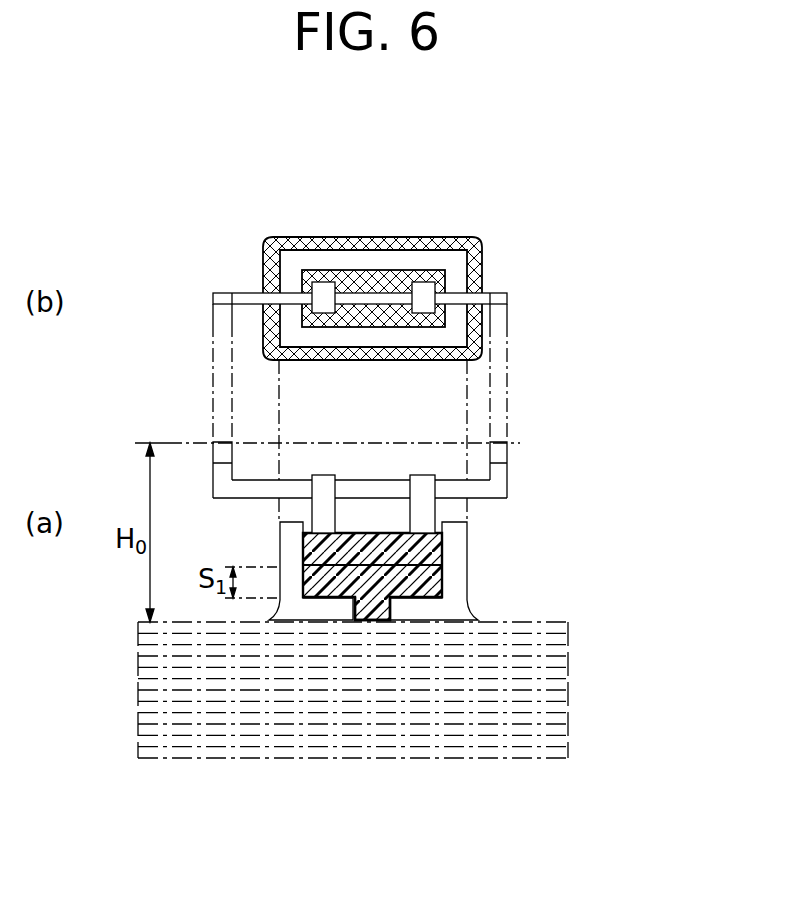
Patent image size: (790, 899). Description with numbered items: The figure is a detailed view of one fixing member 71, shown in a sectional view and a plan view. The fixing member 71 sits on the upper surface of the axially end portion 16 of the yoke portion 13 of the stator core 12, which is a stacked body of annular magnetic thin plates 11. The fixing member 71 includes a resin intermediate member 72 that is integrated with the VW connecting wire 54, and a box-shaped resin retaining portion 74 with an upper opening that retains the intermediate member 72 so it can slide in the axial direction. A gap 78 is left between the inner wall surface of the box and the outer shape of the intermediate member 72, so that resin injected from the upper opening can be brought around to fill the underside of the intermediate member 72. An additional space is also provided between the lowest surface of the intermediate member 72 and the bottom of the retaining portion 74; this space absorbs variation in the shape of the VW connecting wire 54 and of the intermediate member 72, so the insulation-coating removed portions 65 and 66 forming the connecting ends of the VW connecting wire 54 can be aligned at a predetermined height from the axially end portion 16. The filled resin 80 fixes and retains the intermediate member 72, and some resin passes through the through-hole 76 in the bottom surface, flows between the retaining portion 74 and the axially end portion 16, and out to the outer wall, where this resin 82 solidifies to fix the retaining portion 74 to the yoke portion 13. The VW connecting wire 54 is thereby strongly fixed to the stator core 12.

The magnetic thin plates 11 is at (378, 656).
The stator core 12 is at (406, 649).
The yoke portion 13 is at (560, 650).
The axially end portion 16 is at (545, 620).
The VW connecting wire 54 is at (457, 293).
The insulation-coating removed portion 65 is at (508, 453).
The insulation-coating removed portion 66 is at (214, 462).
The fixing member 71 is at (391, 411).
The intermediate member 72 is at (323, 282).
The intermediate member retaining portion 74 is at (430, 258).
The through-hole 76 is at (365, 610).
The gap 78 is at (372, 270).
The resin 80 is at (362, 325).
The resin 82 is at (405, 357).